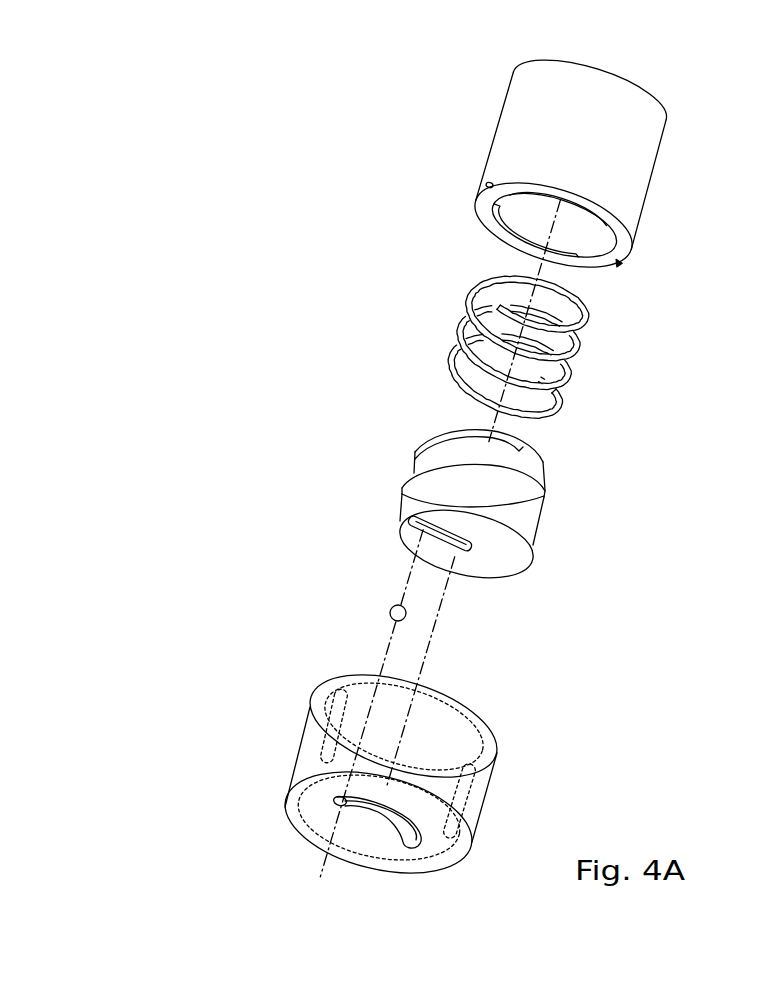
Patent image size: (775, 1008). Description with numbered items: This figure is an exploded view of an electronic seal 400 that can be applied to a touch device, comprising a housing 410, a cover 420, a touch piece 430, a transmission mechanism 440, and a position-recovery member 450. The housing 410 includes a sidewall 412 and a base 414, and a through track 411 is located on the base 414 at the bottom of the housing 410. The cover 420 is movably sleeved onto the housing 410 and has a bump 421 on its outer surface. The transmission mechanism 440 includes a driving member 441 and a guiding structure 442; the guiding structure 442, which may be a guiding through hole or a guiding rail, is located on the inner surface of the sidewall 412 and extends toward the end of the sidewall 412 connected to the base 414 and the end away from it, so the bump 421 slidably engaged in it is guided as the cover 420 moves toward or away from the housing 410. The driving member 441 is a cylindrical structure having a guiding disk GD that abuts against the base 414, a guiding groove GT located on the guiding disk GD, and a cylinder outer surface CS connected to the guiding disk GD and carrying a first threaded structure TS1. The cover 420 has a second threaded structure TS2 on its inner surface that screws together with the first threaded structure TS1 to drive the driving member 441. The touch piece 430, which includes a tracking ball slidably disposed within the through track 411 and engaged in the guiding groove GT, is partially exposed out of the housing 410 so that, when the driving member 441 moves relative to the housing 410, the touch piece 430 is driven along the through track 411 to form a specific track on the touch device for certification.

The electronic seal 400 is at (243, 64).
The cover 420 is at (647, 192).
The bump 421 is at (487, 186).
The second threaded structure TS2 is at (536, 231).
The position-recovery member 450 is at (577, 360).
The transmission mechanism 440 is at (345, 474).
The driving member 441 is at (576, 461).
The first threaded structure TS1 is at (413, 458).
The guiding groove GT is at (415, 525).
The cylinder outer surface CS is at (526, 530).
The guiding disk GD is at (503, 566).
The touch piece 430 is at (390, 612).
The housing 410 is at (487, 797).
The sidewall 412 is at (313, 721).
The guiding structure 442 is at (327, 741).
The through track 411 is at (347, 802).
The base 414 is at (298, 812).